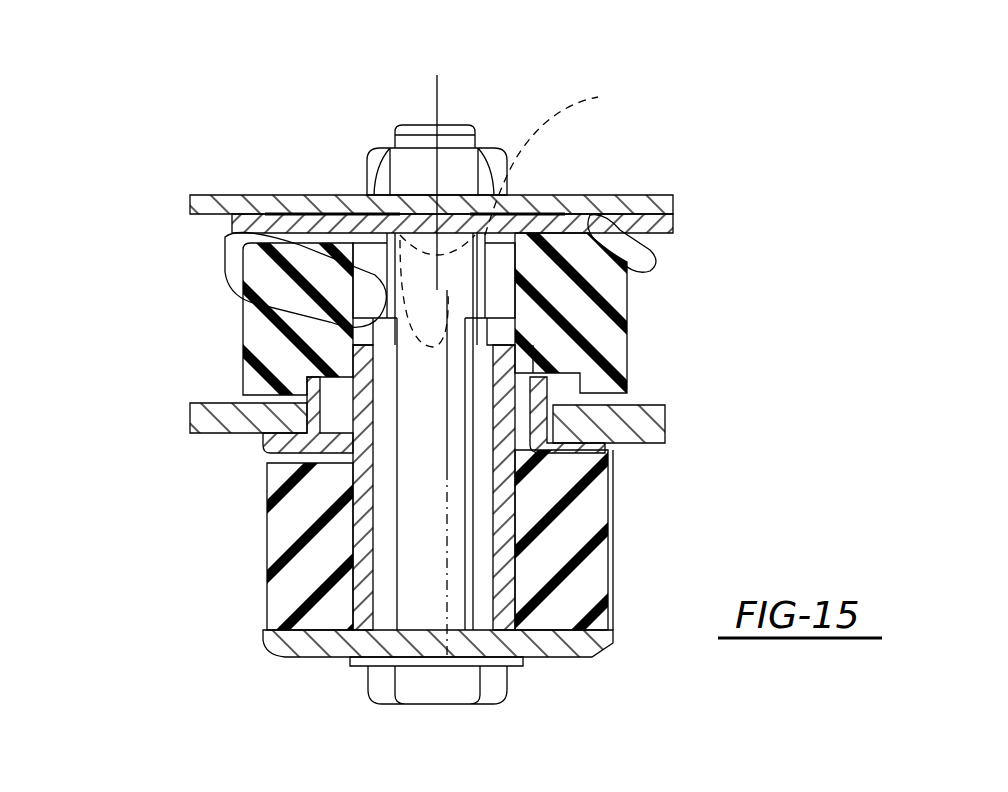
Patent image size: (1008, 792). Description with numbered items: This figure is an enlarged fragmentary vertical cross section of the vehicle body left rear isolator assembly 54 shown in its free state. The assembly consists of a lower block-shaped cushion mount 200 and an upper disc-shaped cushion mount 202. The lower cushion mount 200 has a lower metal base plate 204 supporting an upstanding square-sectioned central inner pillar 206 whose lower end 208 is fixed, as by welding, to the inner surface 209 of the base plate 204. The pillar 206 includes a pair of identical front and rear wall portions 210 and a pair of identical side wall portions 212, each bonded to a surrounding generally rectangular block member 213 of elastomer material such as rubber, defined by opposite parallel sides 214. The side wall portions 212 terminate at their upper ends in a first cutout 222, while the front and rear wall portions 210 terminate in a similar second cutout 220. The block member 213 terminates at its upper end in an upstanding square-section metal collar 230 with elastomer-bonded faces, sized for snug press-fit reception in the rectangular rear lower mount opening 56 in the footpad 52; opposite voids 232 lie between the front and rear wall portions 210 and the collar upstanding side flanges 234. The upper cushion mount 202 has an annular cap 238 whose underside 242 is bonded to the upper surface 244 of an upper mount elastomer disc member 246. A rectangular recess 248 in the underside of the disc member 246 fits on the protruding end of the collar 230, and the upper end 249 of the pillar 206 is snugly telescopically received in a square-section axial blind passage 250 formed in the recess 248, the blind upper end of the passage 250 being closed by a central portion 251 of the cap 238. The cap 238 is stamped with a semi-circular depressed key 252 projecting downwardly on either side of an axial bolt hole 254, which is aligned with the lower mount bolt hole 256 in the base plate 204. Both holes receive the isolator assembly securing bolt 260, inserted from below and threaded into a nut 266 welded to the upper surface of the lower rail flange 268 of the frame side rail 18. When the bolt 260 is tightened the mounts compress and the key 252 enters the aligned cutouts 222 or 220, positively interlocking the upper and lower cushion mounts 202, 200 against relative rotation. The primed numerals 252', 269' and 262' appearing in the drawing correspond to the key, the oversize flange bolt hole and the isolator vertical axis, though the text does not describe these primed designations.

The frame side rail 18 is at (238, 185).
The annular cap 238 is at (325, 228).
The nut 266 is at (448, 140).
The upper nut 252' is at (407, 127).
The nut face 269' is at (341, 150).
The bolt / tension member 262' is at (398, 332).
The bolt hole 254 is at (480, 150).
The depressed key 252 is at (520, 174).
The first cutout 222 is at (488, 233).
The second cutout 220 is at (300, 305).
The central inner pillar 206 is at (488, 588).
The front and rear wall portions 210 is at (365, 515).
The elastomer disc member 246 is at (248, 293).
The upper end of pillar 249 is at (612, 300).
The upper cushion mount 202 is at (232, 353).
The axial blind passage 250 is at (245, 268).
The central portion of cap 251 is at (255, 240).
The upper surface of elastomer disc 244 is at (602, 215).
The underside of cap 242 is at (655, 248).
The lower rail flange 268 is at (662, 200).
The left rear isolator assembly 54 is at (685, 240).
The voids 232 is at (310, 378).
The rear lower mount opening 56 is at (192, 437).
The rectangular recess 248 is at (190, 422).
The footpad 52 is at (228, 455).
The collar upstanding side flanges 234 is at (262, 482).
The metal collar 230 is at (615, 385).
The side wall portions 212 is at (290, 522).
The sides of block member 214 is at (613, 500).
The block member 213 is at (600, 585).
The lower metal base plate 204 is at (258, 577).
The lower cushion mount 200 is at (262, 615).
The inner surface of base plate 209 is at (283, 642).
The lower end of pillar 208 is at (540, 660).
The lower mount bolt hole 256 is at (412, 658).
The isolator assembly securing bolt 260 is at (492, 695).